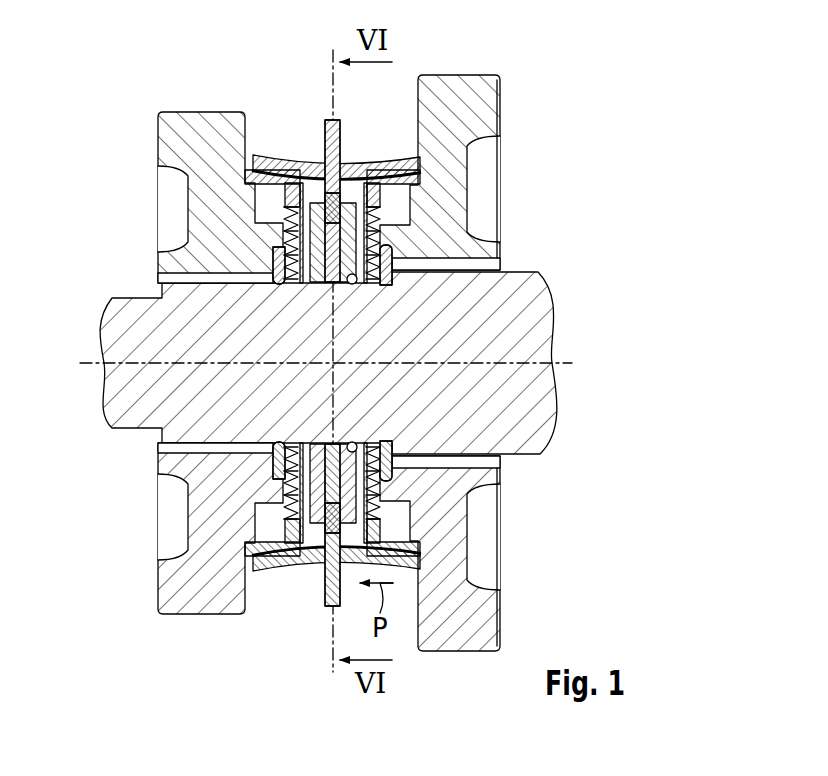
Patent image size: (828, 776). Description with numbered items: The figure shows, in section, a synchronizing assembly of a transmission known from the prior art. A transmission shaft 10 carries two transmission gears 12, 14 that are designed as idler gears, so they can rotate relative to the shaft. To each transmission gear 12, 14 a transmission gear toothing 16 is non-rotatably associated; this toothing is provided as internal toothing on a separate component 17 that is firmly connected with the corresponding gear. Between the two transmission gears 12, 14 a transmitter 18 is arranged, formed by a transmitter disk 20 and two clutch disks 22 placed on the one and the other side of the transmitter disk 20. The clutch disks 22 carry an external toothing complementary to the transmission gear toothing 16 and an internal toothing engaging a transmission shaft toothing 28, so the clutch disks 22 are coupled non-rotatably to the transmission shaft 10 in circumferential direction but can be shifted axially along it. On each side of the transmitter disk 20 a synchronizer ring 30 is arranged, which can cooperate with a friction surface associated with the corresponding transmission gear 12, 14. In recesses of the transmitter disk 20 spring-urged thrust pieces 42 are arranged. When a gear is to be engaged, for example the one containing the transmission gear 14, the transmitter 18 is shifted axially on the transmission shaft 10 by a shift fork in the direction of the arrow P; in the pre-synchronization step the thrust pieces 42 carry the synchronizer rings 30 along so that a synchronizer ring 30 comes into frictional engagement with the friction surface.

The transmission shaft 10 is at (553, 318).
The transmission gear 12 is at (483, 110).
The transmission gear 14 is at (167, 577).
The transmission gear toothing 16 is at (382, 222).
The separate component 17 is at (290, 197).
The transmitter 18 is at (290, 593).
The transmitter disk 20 is at (340, 134).
The clutch disk 22 is at (283, 231).
The transmission shaft toothing 28 is at (362, 272).
The synchronizer ring 30 is at (267, 153).
The thrust piece 42 is at (322, 190).